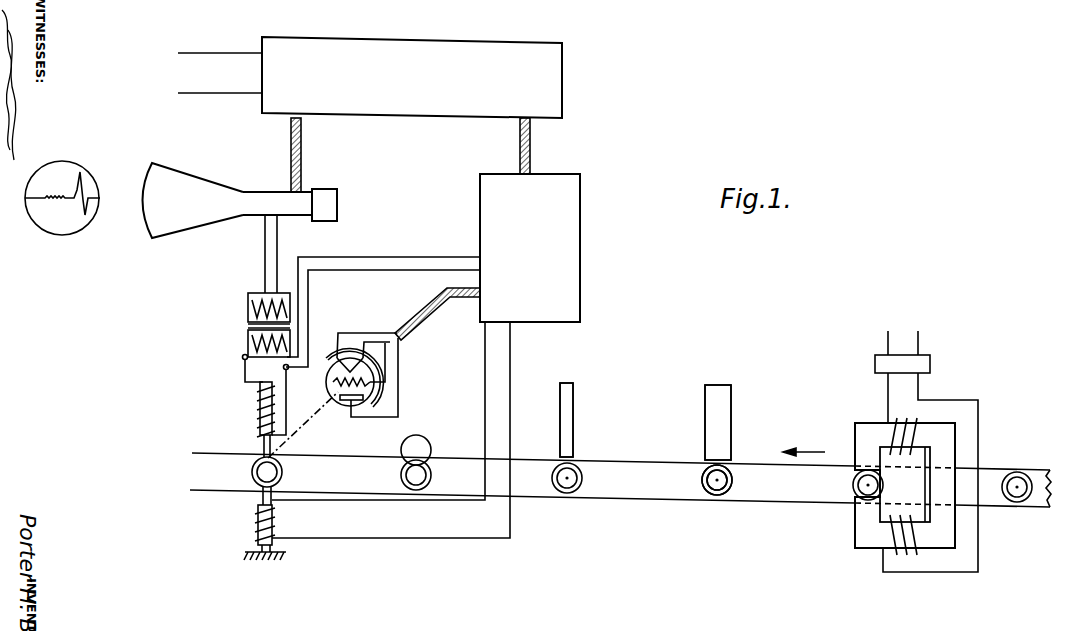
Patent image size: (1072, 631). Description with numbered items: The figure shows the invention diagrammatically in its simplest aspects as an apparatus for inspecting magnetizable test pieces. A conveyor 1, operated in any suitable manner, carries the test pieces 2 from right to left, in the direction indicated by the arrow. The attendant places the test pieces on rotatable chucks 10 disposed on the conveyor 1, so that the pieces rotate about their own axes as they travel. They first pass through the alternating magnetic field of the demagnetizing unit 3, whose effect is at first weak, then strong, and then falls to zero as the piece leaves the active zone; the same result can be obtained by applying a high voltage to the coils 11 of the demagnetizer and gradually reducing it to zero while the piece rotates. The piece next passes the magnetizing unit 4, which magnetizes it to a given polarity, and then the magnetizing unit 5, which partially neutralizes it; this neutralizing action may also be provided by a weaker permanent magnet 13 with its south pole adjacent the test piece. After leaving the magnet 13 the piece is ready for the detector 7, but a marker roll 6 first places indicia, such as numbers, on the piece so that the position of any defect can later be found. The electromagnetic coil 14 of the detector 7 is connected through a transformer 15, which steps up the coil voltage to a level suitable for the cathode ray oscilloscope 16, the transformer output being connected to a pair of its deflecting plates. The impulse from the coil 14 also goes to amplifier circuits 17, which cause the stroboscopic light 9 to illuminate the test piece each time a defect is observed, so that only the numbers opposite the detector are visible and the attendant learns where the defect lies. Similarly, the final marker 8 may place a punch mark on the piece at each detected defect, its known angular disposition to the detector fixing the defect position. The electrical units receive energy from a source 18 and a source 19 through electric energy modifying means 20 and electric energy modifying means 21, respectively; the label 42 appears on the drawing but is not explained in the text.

The conveyor 1 is at (995, 507).
The test pieces 2 is at (252, 472).
The demagnetizing unit 3 is at (852, 540).
The magnetizing unit 4 is at (732, 393).
The magnetizing unit 5 is at (574, 389).
The marker roll 6 is at (428, 446).
The detector 7 is at (327, 450).
The final marker 8 is at (243, 525).
The stroboscopic light 9 is at (327, 386).
The rotatable chucks 10 is at (712, 493).
The coils 11 is at (890, 550).
The permanent magnet 13 is at (574, 418).
The electromagnetic coil 14 is at (258, 408).
The transformer 15 is at (254, 292).
The cathode ray oscilloscope 16 is at (207, 186).
The amplifier circuits 17 is at (582, 244).
The source 18 is at (228, 93).
The source 19 is at (889, 343).
The electric energy modifying means 20 is at (563, 108).
The electric energy modifying means 21 is at (930, 366).
The magnet pole 42 is at (733, 422).